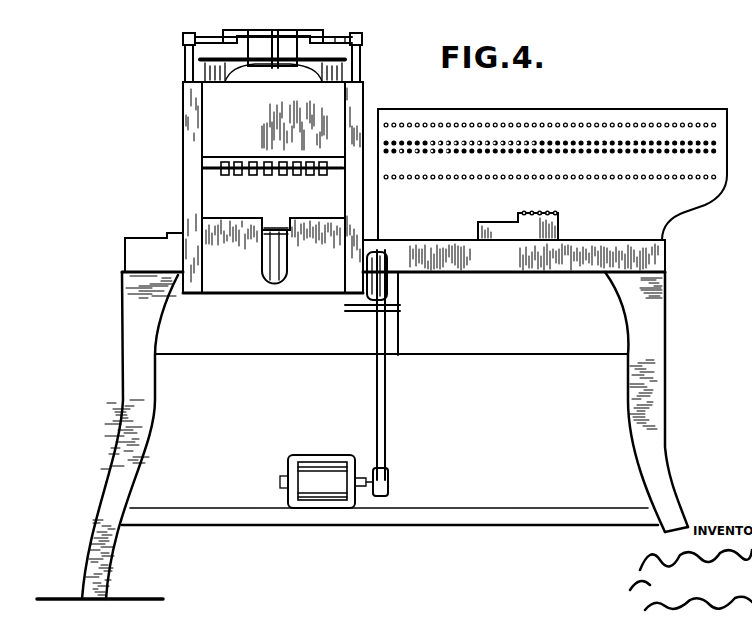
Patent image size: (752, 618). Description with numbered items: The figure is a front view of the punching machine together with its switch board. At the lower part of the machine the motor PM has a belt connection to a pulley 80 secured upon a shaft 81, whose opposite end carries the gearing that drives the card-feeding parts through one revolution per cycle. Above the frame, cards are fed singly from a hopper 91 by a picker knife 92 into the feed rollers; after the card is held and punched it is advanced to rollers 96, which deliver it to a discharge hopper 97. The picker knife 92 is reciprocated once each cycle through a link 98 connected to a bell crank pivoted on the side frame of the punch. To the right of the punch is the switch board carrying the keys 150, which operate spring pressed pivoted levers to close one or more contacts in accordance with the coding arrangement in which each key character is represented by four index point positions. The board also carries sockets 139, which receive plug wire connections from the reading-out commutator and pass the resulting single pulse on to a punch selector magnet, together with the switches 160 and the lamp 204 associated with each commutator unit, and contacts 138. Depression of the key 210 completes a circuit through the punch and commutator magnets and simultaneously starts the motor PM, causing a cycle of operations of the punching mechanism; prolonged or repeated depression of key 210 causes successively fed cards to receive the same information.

The pulley 80 is at (390, 290).
The shaft 81 is at (367, 303).
The hopper 91 is at (280, 66).
The picker knife 92 is at (330, 41).
The rollers 96 is at (267, 176).
The discharge hopper 97 is at (259, 248).
The link 98 is at (183, 61).
The pins 138 is at (568, 154).
The socket 139 is at (483, 141).
The keys 150 is at (538, 212).
The switches 160 is at (448, 192).
The lamp 204 is at (390, 122).
The key 210 is at (560, 213).
The motor PM is at (321, 455).